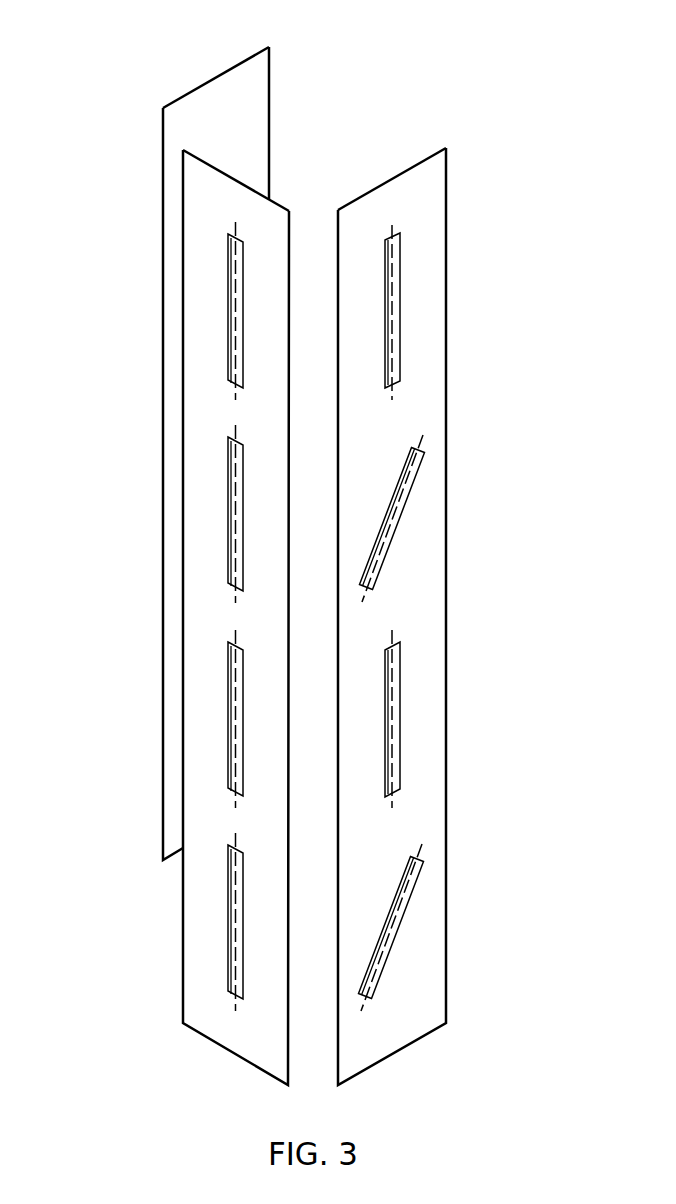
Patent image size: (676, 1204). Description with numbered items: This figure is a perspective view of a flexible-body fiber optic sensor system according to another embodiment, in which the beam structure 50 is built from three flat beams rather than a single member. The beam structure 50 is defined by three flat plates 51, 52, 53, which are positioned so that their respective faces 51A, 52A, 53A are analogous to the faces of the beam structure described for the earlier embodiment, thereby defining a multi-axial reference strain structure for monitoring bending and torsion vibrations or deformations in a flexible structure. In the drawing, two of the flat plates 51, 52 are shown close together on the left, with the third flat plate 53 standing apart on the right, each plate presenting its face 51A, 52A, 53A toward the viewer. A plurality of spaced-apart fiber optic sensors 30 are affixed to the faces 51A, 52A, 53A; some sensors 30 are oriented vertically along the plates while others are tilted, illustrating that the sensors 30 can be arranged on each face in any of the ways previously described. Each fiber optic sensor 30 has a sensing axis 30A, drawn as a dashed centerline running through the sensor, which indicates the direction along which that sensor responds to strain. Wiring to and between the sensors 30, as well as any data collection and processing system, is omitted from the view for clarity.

The fiber optic sensor 30 is at (228, 319).
The sensing axis 30A is at (233, 357).
The beam structure 50 is at (121, 512).
The flat plate 51 is at (162, 137).
The face 51A is at (215, 77).
The flat plate 52 is at (182, 624).
The face 52A is at (197, 197).
The flat plate 53 is at (446, 348).
The face 53A is at (423, 190).